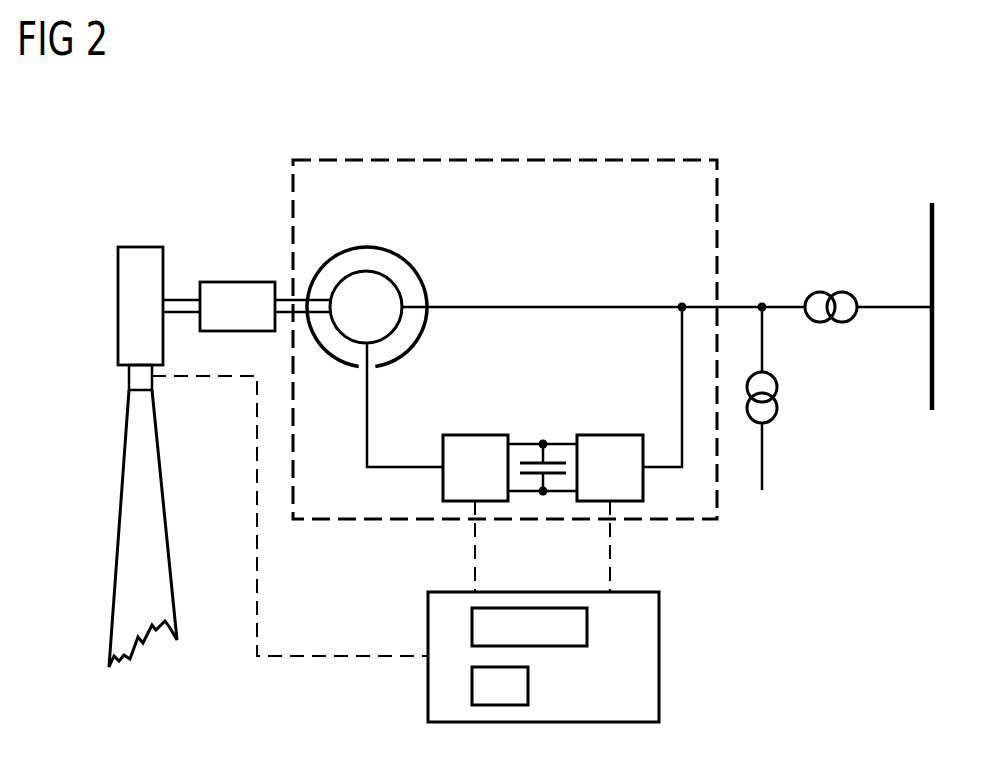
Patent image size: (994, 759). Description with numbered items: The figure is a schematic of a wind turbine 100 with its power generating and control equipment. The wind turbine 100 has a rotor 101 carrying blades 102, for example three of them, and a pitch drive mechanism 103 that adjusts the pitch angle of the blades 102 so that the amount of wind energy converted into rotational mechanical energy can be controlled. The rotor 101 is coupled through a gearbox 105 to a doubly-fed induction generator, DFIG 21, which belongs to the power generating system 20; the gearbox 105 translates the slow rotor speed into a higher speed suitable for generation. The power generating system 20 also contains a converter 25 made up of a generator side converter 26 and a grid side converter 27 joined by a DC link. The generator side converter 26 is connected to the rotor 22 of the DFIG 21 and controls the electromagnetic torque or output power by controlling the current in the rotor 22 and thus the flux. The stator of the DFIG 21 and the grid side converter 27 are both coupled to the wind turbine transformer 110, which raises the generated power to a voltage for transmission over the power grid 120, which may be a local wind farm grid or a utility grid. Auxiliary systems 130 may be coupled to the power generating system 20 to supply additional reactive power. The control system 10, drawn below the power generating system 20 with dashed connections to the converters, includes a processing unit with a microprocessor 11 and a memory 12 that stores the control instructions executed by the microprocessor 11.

The control system 10 is at (659, 658).
The microprocessor 11 is at (587, 627).
The memory 12 is at (528, 688).
The power generating system 20 is at (508, 160).
The doubly-fed induction generator 21 is at (367, 247).
The rotor 22 is at (392, 278).
The converter 25 is at (552, 405).
The generator side converter 26 is at (475, 435).
The grid side converter 27 is at (610, 435).
The wind turbine 100 is at (788, 122).
The rotor 101 is at (82, 431).
The blades 102 is at (176, 612).
The pitch drive mechanism 103 is at (137, 376).
The gearbox 105 is at (237, 282).
The wind turbine transformer 110 is at (820, 292).
The power grid 120 is at (930, 260).
The auxiliary systems 130 is at (762, 463).